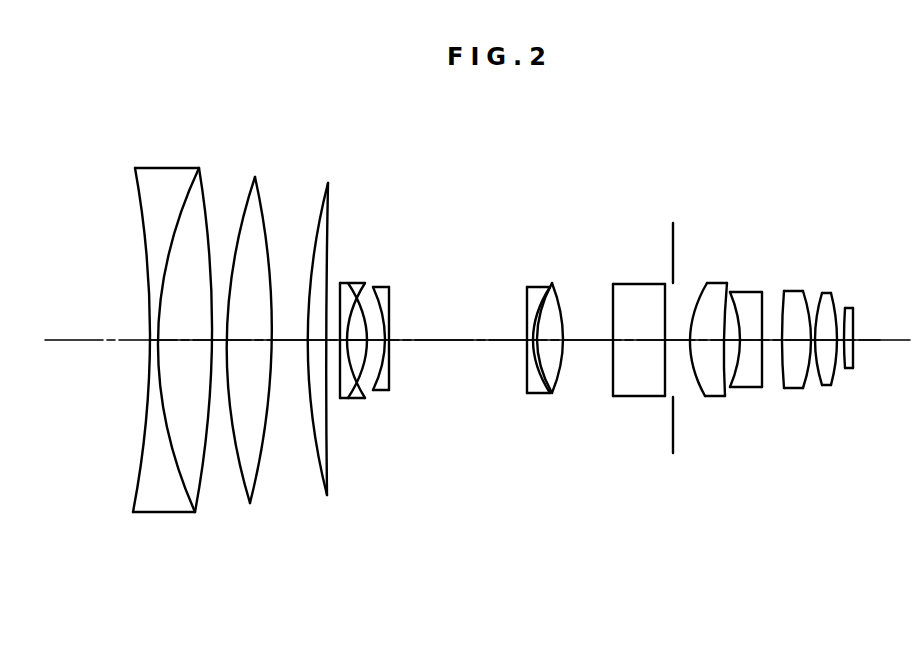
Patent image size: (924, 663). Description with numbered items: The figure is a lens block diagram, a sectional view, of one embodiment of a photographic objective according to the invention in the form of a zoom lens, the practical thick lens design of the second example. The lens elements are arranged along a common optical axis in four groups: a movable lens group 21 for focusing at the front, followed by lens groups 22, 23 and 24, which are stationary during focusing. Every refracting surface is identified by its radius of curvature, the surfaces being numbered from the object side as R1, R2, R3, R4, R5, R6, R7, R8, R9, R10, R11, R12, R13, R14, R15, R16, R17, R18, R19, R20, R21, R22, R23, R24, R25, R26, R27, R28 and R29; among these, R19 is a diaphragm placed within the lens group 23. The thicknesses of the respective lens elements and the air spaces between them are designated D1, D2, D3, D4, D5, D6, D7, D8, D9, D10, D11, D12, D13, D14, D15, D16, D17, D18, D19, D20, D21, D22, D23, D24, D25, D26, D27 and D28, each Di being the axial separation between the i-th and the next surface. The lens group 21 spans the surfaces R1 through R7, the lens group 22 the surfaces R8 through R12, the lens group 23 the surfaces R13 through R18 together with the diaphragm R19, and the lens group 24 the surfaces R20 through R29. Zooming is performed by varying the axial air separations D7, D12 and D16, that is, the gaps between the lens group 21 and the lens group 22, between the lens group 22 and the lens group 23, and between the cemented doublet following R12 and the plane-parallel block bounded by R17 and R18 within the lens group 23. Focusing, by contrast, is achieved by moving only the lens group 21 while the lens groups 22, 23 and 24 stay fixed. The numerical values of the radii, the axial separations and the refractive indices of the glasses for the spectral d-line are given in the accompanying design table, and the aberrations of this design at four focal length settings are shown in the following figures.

The radius of curvature of the first surface R1 is at (135, 176).
The radius of curvature of the second surface R2 is at (197, 181).
The radius of curvature of the third surface R3 is at (204, 192).
The radius of curvature of the fourth surface R4 is at (249, 197).
The radius of curvature of the fifth surface R5 is at (259, 192).
The radius of curvature of the sixth surface R6 is at (313, 203).
The radius of curvature of the seventh surface R7 is at (331, 201).
The radius of curvature of the eighth surface R8 is at (340, 285).
The radius of curvature of the ninth surface R9 is at (348, 284).
The radius of curvature of the tenth surface R10 is at (366, 288).
The radius of curvature of the eleventh surface R11 is at (377, 291).
The radius of curvature of the twelfth surface R12 is at (391, 298).
The radius of curvature of the thirteenth surface R13 is at (528, 298).
The radius of curvature of the fourteenth surface R14 is at (540, 291).
The radius of curvature of the fifteenth surface R15 is at (552, 284).
The radius of curvature of the sixteenth surface R16 is at (558, 291).
The radius of curvature of the seventeenth surface R17 is at (613, 315).
The radius of curvature of the eighteenth surface R18 is at (664, 292).
The diaphragm R19 is at (675, 226).
The radius of curvature of the twentieth surface R20 is at (700, 288).
The radius of curvature of the twenty-first surface R21 is at (725, 283).
The radius of curvature of the twenty-second surface R22 is at (735, 294).
The radius of curvature of the twenty-third surface R23 is at (763, 292).
The radius of curvature of the twenty-fourth surface R24 is at (786, 291).
The radius of curvature of the twenty-fifth surface R25 is at (805, 293).
The radius of curvature of the twenty-sixth surface R26 is at (823, 294).
The radius of curvature of the twenty-seventh surface R27 is at (838, 304).
The radius of curvature of the twenty-eighth surface R28 is at (843, 311).
The radius of curvature of the twenty-ninth surface R29 is at (857, 323).
The axial thickness D1 is at (153, 351).
The axial thickness D2 is at (177, 344).
The axial air separation D3 is at (214, 352).
The axial thickness D4 is at (243, 344).
The axial air separation D5 is at (270, 351).
The axial thickness D6 is at (290, 344).
The variable axial air separation D7 is at (330, 348).
The axial thickness D8 is at (345, 356).
The axial thickness D9 is at (352, 394).
The axial thickness D10 is at (372, 396).
The axial thickness D11 is at (388, 356).
The variable axial air separation D12 is at (463, 344).
The axial thickness D13 is at (529, 353).
The axial thickness D14 is at (535, 360).
The axial thickness D15 is at (550, 356).
The variable axial air separation D16 is at (593, 343).
The axial thickness D17 is at (639, 342).
The axial air separation D18 is at (668, 353).
The axial air separation D19 is at (685, 353).
The axial thickness D20 is at (705, 353).
The axial thickness D21 is at (735, 355).
The axial thickness D22 is at (750, 355).
The axial thickness D23 is at (773, 355).
The axial thickness D24 is at (793, 355).
The axial thickness D25 is at (815, 355).
The axial thickness D26 is at (827, 355).
The axial thickness D27 is at (848, 364).
The axial thickness D28 is at (855, 352).
The movable lens group for focusing 21 is at (215, 531).
The lens group stationary during focusing 22 is at (333, 531).
The lens group stationary during focusing 23 is at (667, 531).
The lens group stationary during focusing 24 is at (869, 531).